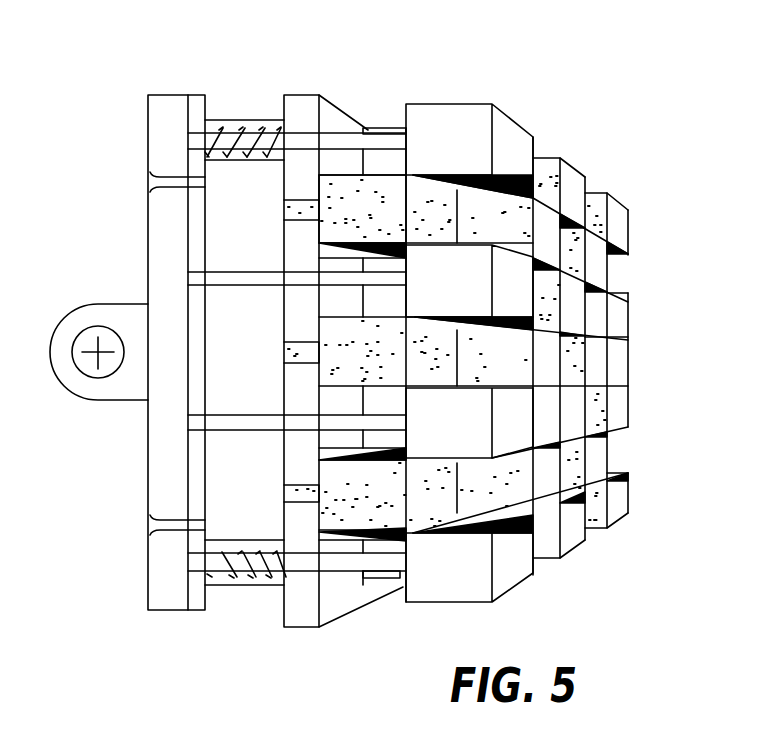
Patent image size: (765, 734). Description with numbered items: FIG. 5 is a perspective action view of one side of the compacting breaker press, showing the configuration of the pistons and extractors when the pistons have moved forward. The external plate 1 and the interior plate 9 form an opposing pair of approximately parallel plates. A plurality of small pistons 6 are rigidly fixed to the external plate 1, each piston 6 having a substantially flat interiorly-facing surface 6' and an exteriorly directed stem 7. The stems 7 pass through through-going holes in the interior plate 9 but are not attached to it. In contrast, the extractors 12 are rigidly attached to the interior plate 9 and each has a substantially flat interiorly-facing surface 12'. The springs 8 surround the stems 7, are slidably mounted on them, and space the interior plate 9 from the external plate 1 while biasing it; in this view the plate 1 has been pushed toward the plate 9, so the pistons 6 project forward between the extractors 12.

The external plate 1 is at (166, 449).
The piston 6 is at (469, 317).
The interiorly-facing surface of piston 6' is at (520, 356).
The stem 7 is at (356, 128).
The spring 8 is at (247, 126).
The interior plate 9 is at (294, 118).
The extractor 12 is at (471, 160).
The interiorly-facing surface of extractor 12' is at (469, 285).